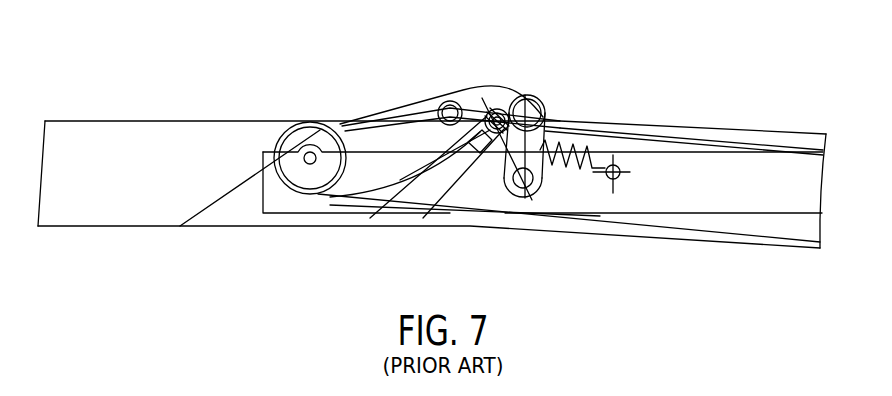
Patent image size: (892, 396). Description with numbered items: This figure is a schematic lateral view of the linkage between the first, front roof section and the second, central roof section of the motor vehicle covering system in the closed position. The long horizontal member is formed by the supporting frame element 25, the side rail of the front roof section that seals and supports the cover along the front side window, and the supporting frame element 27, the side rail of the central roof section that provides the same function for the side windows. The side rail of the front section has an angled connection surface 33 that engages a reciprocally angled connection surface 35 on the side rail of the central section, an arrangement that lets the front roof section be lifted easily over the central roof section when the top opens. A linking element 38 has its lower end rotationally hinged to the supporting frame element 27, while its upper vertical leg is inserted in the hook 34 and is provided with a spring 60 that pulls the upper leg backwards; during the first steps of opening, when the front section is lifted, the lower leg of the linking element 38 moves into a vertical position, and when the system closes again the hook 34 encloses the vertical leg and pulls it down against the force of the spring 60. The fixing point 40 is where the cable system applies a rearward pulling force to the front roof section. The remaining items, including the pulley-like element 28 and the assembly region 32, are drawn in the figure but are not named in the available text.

The supporting frame element 25 is at (78, 210).
The supporting frame element 27 is at (518, 220).
The pulley 28 is at (312, 122).
The tensioner assembly 32 is at (512, 63).
The connection surface 33 is at (211, 205).
The hook 34 is at (455, 193).
The connection surface 35 is at (263, 157).
The linking element 38 is at (487, 197).
The fixing point 40 is at (453, 101).
The spring 60 is at (583, 152).